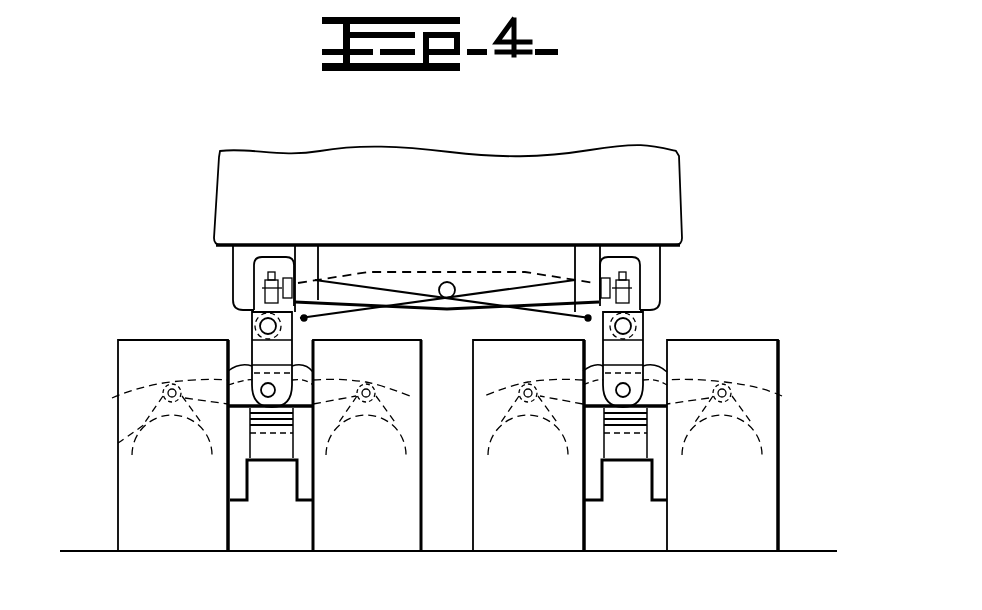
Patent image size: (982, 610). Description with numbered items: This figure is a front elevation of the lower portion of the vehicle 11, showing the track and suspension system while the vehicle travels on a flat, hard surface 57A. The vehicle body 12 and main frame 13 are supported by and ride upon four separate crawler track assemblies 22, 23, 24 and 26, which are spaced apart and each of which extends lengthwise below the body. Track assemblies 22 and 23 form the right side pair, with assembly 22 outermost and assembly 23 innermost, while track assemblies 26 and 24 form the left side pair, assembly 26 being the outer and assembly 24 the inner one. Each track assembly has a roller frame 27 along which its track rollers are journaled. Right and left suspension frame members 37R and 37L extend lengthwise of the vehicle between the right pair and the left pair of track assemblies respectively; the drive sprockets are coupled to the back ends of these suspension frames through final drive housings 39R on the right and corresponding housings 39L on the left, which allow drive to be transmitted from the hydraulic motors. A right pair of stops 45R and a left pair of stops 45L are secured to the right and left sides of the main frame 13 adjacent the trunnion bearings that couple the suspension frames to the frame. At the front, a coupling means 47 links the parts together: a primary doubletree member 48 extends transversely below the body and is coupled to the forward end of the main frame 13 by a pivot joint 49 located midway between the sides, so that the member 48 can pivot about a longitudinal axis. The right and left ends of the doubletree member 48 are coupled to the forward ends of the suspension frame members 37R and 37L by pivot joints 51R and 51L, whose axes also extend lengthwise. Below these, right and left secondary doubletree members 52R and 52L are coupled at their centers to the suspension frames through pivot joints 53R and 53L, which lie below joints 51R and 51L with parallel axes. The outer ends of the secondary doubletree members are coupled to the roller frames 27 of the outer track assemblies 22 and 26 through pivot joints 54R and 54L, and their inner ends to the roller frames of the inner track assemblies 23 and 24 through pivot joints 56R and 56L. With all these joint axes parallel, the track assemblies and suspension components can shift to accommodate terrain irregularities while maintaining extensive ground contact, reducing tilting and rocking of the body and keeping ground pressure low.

The crawler vehicle 11 is at (700, 147).
The vehicle body 12 is at (415, 211).
The main frame 13 is at (305, 258).
The crawler track assembly 22 is at (195, 494).
The crawler track assembly 23 is at (382, 514).
The crawler track assembly 24 is at (551, 514).
The crawler track assembly 26 is at (762, 507).
The roller frame 27 is at (118, 443).
The right suspension frame member 37R is at (256, 360).
The left suspension frame member 37L is at (638, 348).
The final drive housings 39R is at (308, 493).
The left track frame bracket 39L is at (665, 488).
The right side pair of stops 45R is at (240, 275).
The left side pair of stops 45L is at (653, 273).
The front coupling means 47 is at (683, 285).
The primary doubletree member 48 is at (512, 262).
The pivot joint 49 is at (447, 282).
The pivot joint 51R is at (256, 318).
The pivot joint 51L is at (636, 322).
The right secondary doubletree member 52R is at (213, 383).
The left secondary doubletree member 52L is at (678, 436).
The pivot joint 53R is at (294, 410).
The pivot joint 53L is at (603, 404).
The pivot joint 54R is at (122, 395).
The pivot joint 54L is at (780, 393).
The pivot joint 56R is at (366, 386).
The pivot joint 56L is at (536, 386).
The flat, hard surface 57A is at (436, 543).